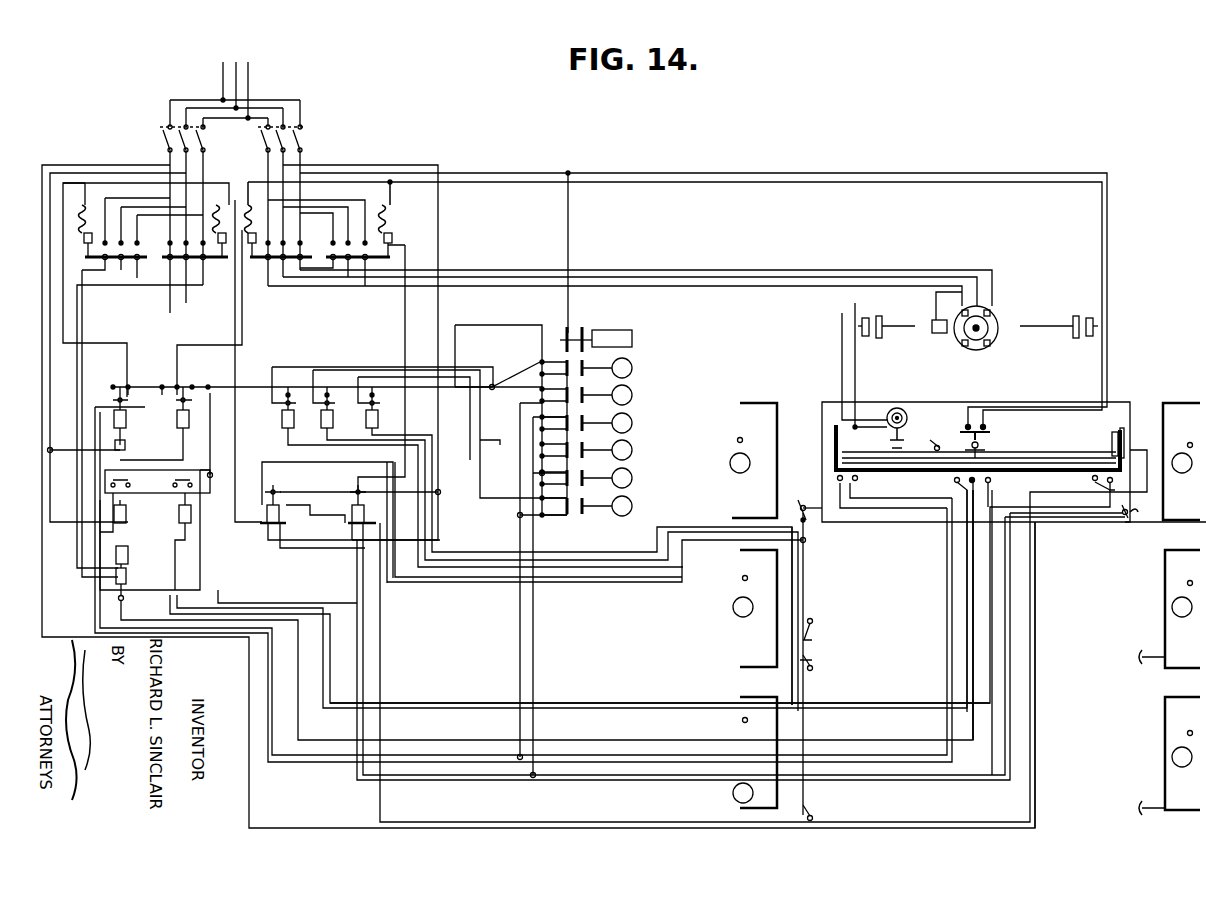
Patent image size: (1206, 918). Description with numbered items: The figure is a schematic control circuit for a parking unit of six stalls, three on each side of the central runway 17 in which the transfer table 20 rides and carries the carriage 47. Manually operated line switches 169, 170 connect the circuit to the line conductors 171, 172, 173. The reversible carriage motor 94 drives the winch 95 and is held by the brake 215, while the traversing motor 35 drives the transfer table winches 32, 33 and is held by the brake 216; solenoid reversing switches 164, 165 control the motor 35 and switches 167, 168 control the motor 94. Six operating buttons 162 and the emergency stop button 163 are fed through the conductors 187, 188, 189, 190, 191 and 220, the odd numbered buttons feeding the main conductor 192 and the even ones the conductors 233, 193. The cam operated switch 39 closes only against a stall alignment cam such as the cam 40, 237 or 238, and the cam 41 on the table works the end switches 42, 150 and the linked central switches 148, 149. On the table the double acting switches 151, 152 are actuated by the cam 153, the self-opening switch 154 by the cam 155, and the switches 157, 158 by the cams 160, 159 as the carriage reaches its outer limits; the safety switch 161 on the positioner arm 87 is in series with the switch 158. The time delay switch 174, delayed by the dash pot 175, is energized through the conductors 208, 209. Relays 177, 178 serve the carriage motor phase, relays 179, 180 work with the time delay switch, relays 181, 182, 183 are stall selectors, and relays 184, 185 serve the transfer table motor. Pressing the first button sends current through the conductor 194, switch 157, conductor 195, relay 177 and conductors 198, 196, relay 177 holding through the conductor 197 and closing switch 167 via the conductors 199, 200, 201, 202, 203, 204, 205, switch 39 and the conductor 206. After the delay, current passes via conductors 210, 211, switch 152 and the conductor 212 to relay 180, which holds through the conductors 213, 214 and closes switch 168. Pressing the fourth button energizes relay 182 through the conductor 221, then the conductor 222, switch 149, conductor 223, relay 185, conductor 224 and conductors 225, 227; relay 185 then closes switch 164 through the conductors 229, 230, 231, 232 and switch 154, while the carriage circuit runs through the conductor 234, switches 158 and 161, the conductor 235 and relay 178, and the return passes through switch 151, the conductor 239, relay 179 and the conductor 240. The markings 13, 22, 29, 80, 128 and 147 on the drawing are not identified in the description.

The motor circuit 13 is at (949, 628).
The central runway 17 is at (1098, 725).
The transfer table 20 is at (962, 402).
The circuit 22 is at (728, 463).
The contact 29 is at (1176, 444).
The transfer table winch 32 is at (870, 337).
The transfer table winch 33 is at (1072, 340).
The reversible traversing motor 35 is at (996, 304).
The cam operated switch 39 is at (1124, 520).
The stall alignment cam 40 is at (1138, 520).
The cam 41 is at (814, 494).
The end switch 42 is at (802, 498).
The carriage 47 is at (1042, 465).
The cam member 80 is at (832, 424).
The positioner arm 87 is at (1110, 440).
The reversible carriage motor 94 is at (892, 407).
The winch 95 is at (904, 446).
The contact 128 is at (934, 442).
The terminal block 147 is at (737, 442).
The central switch 148 is at (822, 630).
The central switch 149 is at (822, 660).
The end switch 150 is at (818, 806).
The double acting switch 151 is at (958, 484).
The double acting switch 152 is at (982, 486).
The cam 153 is at (996, 479).
The self-opening cam closing switch 154 is at (985, 432).
The cam 155 is at (981, 448).
The cam actuated switch 157 is at (848, 486).
The cam actuated switch 158 is at (1106, 488).
The cam 159 is at (858, 477).
The cam 160 is at (1092, 479).
The safety switch 161 is at (1124, 442).
The operating buttons 162 is at (638, 430).
The emergency stop button 163 is at (632, 340).
The solenoid operated reversing switch 164 is at (325, 255).
The solenoid operated reversing switch 165 is at (312, 255).
The carriage motor control switch 167 is at (147, 255).
The carriage motor control switch 168 is at (162, 255).
The line switch 169 is at (164, 126).
The line switch 170 is at (305, 135).
The line conductor 171 is at (252, 69).
The line conductor 172 is at (235, 60).
The line conductor 173 is at (221, 68).
The time delay solenoid switch 174 is at (127, 574).
The dash pot 175 is at (126, 556).
The interlocking relay 177 is at (114, 412).
The interlocking relay 178 is at (186, 430).
The double upper contact relay 179 is at (124, 506).
The double upper contact relay 180 is at (186, 522).
The single contact relay 181 is at (280, 424).
The single contact relay 182 is at (322, 432).
The single contact relay 183 is at (366, 428).
The relay 184 is at (279, 512).
The relay 185 is at (362, 512).
The conductor 187 is at (474, 173).
The conductor 188 is at (568, 236).
The conductor 189 is at (552, 340).
The conductor 190 is at (144, 384).
The conductor 191 is at (551, 514).
The main conductor 192 is at (520, 606).
The conductor 193 is at (533, 608).
The conductor 194 is at (642, 758).
The conductor 195 is at (98, 606).
The conductor 196 is at (50, 354).
The conductor 197 is at (94, 394).
The conductor 198 is at (62, 448).
The conductor 199 is at (144, 443).
The conductor 200 is at (130, 380).
The conductor 201 is at (89, 344).
The conductor 202 is at (205, 183).
The conductor 203 is at (236, 352).
The conductor 204 is at (342, 546).
The conductor 205 is at (1034, 563).
The conductor 206 is at (42, 266).
The conductor 208 is at (82, 306).
The conductor 209 is at (77, 292).
The conductor 210 is at (211, 392).
The conductor 211 is at (121, 608).
The conductor 212 is at (960, 568).
The conductor 213 is at (206, 468).
The conductor 214 is at (192, 345).
The brake 215 is at (162, 388).
The brake 216 is at (932, 320).
The conductor 220 is at (556, 444).
The conductor 221 is at (500, 442).
The conductor 222 is at (361, 442).
The conductor 223 is at (604, 578).
The conductor 224 is at (289, 524).
The conductor 225 is at (304, 546).
The conductor 227 is at (386, 166).
The conductor 229 is at (325, 487).
The conductor 230 is at (406, 330).
The conductor 231 is at (396, 193).
The conductor 232 is at (526, 184).
The conductor 233 is at (562, 413).
The conductor 234 is at (1024, 498).
The conductor 235 is at (1032, 652).
The stall alignment cam 237 is at (124, 438).
The stall alignment cam 238 is at (1140, 807).
The conductor 239 is at (838, 710).
The conductor 240 is at (142, 458).